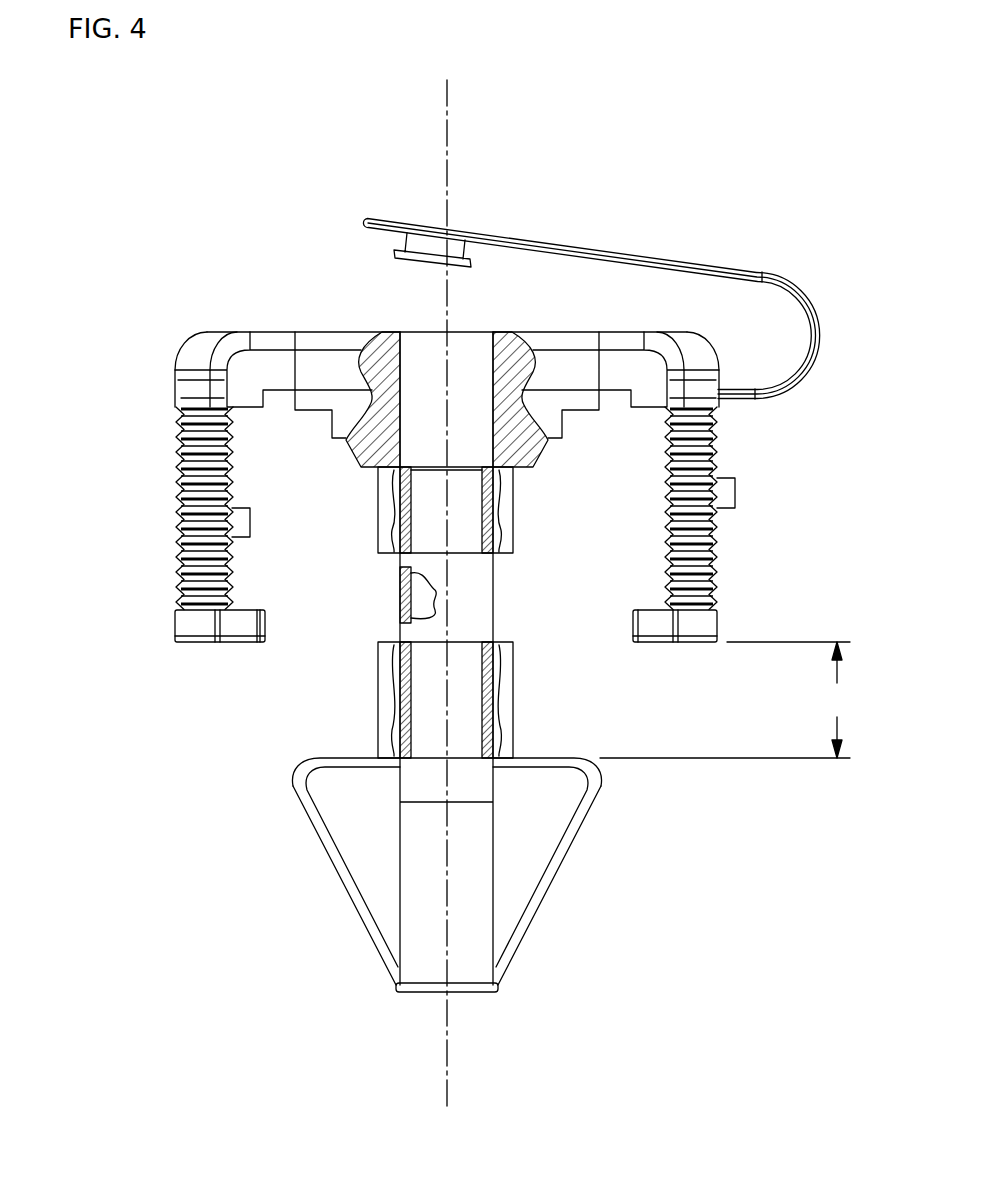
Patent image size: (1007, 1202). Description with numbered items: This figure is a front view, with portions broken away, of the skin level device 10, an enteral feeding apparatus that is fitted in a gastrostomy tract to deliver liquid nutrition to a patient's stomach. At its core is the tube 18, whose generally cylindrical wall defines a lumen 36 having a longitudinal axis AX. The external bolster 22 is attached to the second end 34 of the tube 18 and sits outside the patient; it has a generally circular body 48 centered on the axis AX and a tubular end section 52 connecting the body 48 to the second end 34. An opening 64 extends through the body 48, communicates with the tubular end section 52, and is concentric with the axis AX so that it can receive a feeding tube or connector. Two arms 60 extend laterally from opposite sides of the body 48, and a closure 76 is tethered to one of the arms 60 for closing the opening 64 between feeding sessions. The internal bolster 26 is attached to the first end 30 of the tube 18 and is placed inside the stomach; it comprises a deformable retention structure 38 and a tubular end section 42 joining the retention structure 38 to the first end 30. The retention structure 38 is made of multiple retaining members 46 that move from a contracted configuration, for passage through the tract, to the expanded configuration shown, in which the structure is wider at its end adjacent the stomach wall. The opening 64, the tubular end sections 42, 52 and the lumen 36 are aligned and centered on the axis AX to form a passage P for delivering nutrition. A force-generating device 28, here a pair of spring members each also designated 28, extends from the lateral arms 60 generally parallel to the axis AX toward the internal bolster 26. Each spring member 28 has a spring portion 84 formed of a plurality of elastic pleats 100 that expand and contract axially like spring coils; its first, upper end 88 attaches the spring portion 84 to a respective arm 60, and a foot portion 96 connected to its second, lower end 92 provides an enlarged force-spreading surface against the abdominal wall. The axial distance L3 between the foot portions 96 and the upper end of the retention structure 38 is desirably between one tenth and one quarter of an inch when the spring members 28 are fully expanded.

The skin level device 10 is at (762, 128).
The closure 76 is at (725, 262).
The external bolster 22 is at (322, 330).
The opening 64 is at (462, 335).
The passage P is at (482, 352).
The body 48 is at (605, 330).
The arms 60 is at (182, 343).
The first (upper) end 88 is at (172, 390).
The force-generating device 28 is at (172, 455).
The spring portion 84 is at (176, 498).
The pleats 100 is at (250, 522).
The tubular end section 52 is at (500, 494).
The second end 34 is at (502, 522).
The lumen 36 is at (410, 604).
The tube 18 is at (500, 603).
The second (lower) end 92 is at (180, 607).
The foot portion 96 is at (232, 645).
The first end 30 is at (500, 687).
The tubular end section 42 is at (514, 733).
The axial distance L3 is at (726, 700).
The internal bolster 26 is at (240, 800).
The deformable retention structure 38 is at (595, 838).
The retaining members 46 is at (350, 920).
The longitudinal axis AX is at (447, 1078).